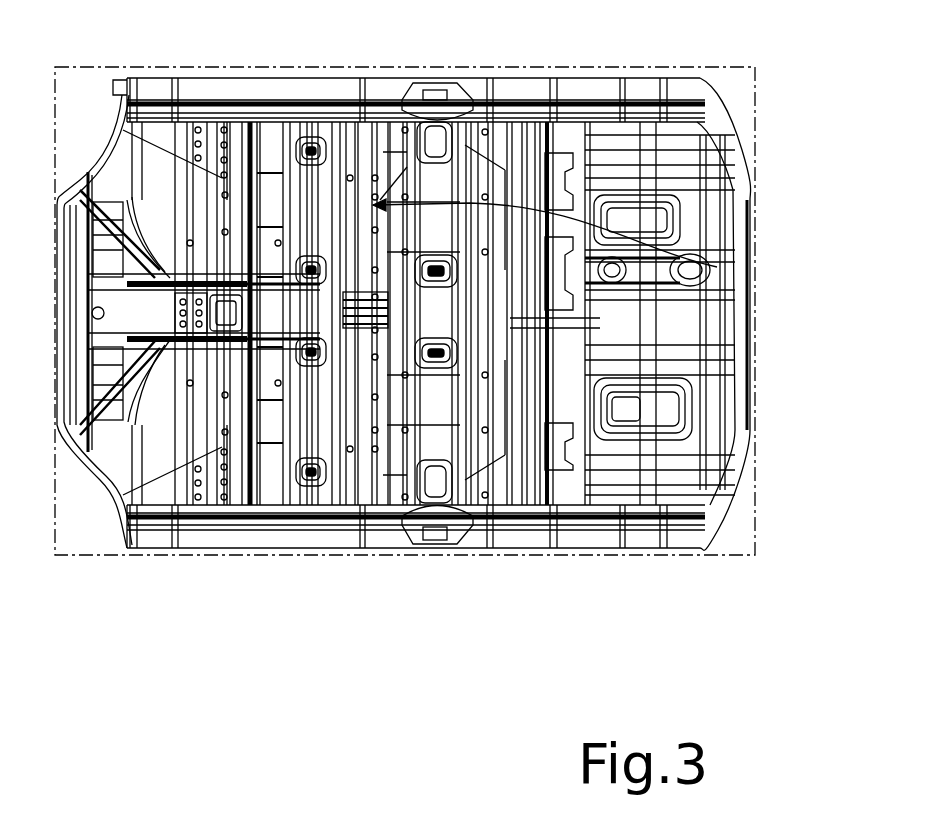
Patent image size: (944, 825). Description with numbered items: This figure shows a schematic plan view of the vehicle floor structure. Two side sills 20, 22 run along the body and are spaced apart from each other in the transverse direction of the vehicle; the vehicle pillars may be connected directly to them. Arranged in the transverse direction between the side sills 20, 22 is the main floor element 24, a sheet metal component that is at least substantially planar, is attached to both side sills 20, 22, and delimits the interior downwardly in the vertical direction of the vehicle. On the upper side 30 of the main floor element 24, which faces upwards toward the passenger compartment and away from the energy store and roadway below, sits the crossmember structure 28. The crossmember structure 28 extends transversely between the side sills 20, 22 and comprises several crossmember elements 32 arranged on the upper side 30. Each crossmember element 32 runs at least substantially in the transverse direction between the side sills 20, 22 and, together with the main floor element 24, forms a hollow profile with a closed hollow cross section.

The side sill 20 is at (513, 533).
The side sill 22 is at (303, 88).
The main floor element 24 is at (371, 135).
The crossmember structure 28 is at (513, 323).
The upper side 30 is at (717, 267).
The crossmember element 32 is at (222, 412).